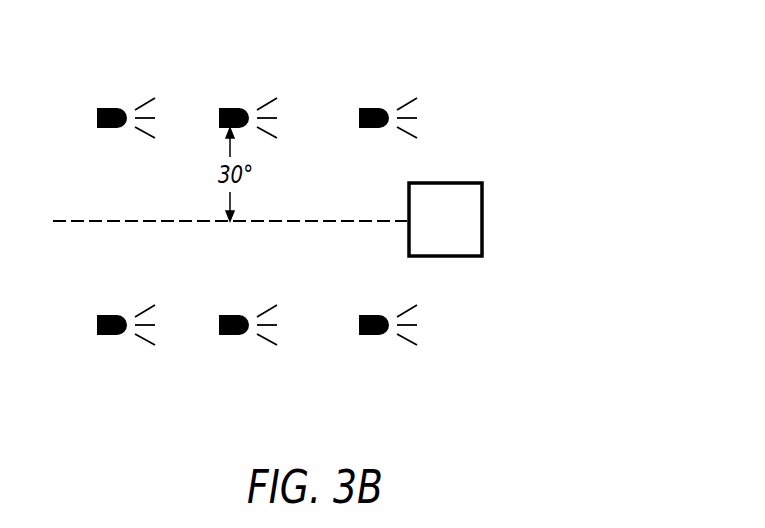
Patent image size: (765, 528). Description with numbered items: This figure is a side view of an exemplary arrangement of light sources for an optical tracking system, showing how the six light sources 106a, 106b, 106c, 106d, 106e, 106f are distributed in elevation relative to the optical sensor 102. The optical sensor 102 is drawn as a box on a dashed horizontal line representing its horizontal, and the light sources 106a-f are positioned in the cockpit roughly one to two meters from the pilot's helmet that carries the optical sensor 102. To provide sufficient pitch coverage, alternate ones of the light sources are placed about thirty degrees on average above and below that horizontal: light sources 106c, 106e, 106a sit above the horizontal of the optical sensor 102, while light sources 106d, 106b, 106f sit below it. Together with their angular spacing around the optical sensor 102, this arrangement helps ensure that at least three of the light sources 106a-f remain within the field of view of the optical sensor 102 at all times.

The optical sensor 102 is at (484, 221).
The light source 106a is at (359, 118).
The light source 106b is at (219, 323).
The light source 106c is at (97, 118).
The light source 106d is at (97, 323).
The light source 106e is at (219, 118).
The light source 106f is at (359, 323).